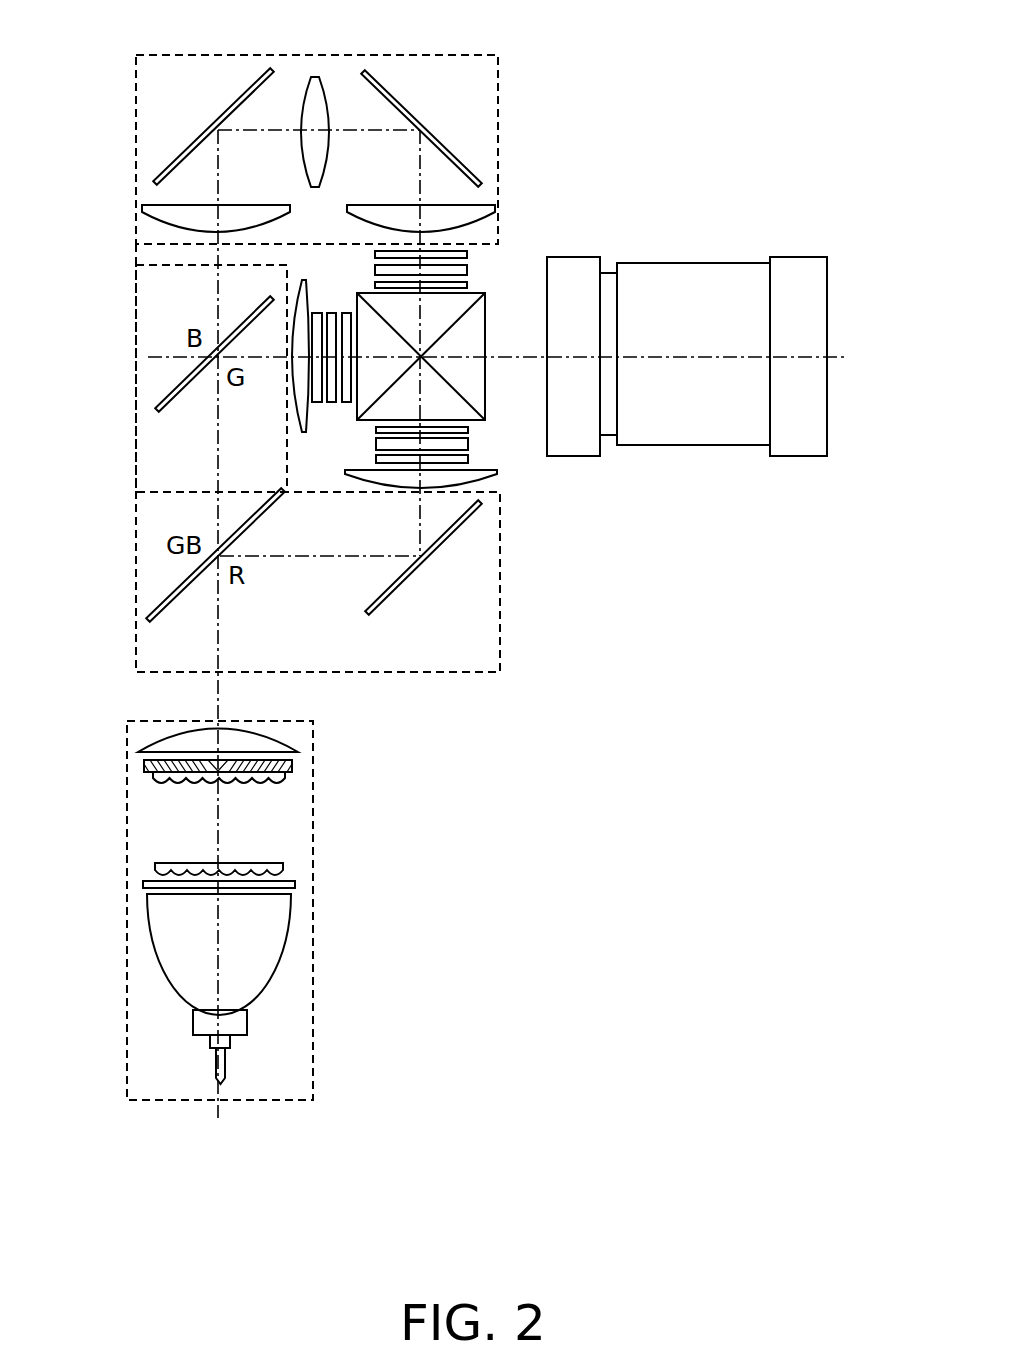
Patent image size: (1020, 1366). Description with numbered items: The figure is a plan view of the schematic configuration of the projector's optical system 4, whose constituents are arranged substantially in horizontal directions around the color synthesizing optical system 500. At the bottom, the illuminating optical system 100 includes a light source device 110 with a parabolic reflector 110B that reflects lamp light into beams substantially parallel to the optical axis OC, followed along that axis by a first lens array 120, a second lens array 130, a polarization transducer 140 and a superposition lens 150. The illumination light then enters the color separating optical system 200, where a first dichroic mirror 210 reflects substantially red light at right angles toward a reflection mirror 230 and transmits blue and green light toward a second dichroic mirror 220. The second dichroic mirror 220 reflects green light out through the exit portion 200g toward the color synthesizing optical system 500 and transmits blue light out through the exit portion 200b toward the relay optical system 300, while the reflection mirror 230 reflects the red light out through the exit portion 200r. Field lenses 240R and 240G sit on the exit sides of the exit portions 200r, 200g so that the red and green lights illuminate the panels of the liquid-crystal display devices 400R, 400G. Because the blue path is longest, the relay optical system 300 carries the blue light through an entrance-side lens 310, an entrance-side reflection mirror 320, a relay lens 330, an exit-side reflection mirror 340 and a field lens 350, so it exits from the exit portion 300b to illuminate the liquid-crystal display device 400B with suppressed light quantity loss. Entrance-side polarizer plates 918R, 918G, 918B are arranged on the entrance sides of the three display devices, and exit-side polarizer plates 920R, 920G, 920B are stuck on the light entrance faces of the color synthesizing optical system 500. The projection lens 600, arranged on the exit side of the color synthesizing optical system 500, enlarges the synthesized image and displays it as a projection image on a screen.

The optical system 4 is at (662, 106).
The illuminating optical system 100 is at (315, 1082).
The light source device 110 is at (282, 1006).
The reflector 110B is at (287, 942).
The first lens array 120 is at (283, 865).
The second lens array 130 is at (285, 777).
The polarization transducer 140 is at (293, 766).
The superposition lens 150 is at (285, 735).
The color separating optical system 200 is at (446, 672).
The exit portion for B light 200b is at (158, 264).
The exit portion for G light 200g is at (215, 285).
The exit portion for R light 200r is at (470, 478).
The first dichroic mirror 210 is at (168, 603).
The second dichroic mirror 220 is at (182, 400).
The reflection mirror 230 is at (396, 587).
The field lens for G light 240G is at (306, 300).
The field lens for R light 240R is at (497, 475).
The relay optical system 300 is at (400, 54).
The exit portion of B light in relay optical system 300b is at (468, 250).
The entrance-side lens 310 is at (232, 205).
The entrance-side reflection mirror 320 is at (232, 102).
The relay lens 330 is at (322, 85).
The exit-side reflection mirror 340 is at (405, 110).
The field lens 350 is at (358, 205).
The liquid-crystal display device for B light 400B is at (468, 270).
The liquid-crystal display device for G light 400G is at (331, 402).
The liquid-crystal display device for R light 400R is at (468, 444).
The color synthesizing optical system 500 is at (486, 313).
The projection lens 600 is at (725, 445).
The entrance-side polarizer plate for B light 918B is at (468, 256).
The entrance-side polarizer plate for G light 918G is at (317, 402).
The entrance-side polarizer plate for R light 918R is at (468, 459).
The exit-side polarizer plate for B light 920B is at (468, 285).
The exit-side polarizer plate for G light 920G is at (346, 402).
The exit-side polarizer plate for R light 920R is at (468, 430).
The optical axis OC is at (218, 812).